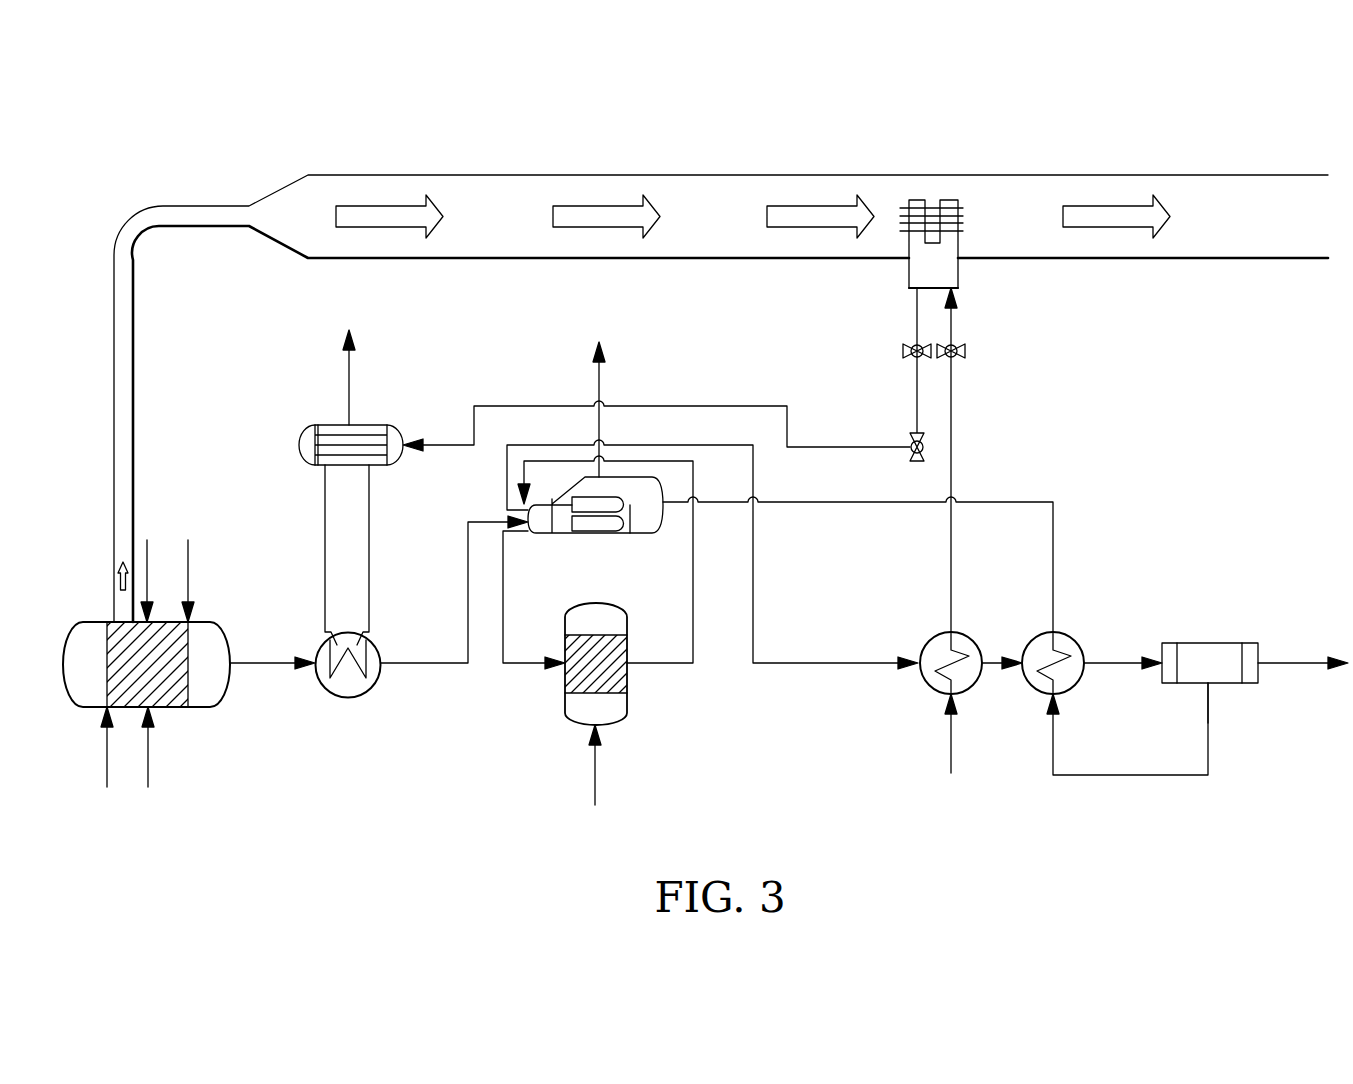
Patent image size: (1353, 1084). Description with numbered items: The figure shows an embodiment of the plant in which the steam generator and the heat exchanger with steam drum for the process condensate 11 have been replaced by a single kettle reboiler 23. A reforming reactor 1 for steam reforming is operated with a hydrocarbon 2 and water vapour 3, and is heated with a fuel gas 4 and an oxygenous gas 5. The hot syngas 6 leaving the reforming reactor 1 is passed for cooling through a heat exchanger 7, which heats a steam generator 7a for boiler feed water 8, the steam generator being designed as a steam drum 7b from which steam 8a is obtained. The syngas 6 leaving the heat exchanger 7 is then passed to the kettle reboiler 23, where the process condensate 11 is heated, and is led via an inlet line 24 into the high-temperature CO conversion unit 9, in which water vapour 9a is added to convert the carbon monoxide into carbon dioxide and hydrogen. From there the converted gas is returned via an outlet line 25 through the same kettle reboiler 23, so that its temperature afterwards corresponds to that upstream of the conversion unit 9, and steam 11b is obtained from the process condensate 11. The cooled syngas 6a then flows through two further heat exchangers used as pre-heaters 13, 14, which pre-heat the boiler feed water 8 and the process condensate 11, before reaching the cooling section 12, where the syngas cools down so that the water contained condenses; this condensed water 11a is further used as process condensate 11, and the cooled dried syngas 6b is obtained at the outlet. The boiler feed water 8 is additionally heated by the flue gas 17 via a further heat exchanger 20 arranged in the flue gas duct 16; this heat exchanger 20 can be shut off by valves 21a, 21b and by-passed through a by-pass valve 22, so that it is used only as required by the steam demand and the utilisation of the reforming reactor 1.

The reforming reactor 1 is at (215, 707).
The hydrocarbon 2 is at (107, 777).
The water vapour 3 is at (148, 777).
The fuel gas 4 is at (147, 553).
The oxygenous gas 5 is at (188, 553).
The syngas 6 is at (258, 663).
The cooled syngas 6a is at (800, 663).
The cooled dried syngas 6b is at (1290, 663).
The heat exchanger 7 is at (372, 645).
The steam generator 7a is at (388, 467).
The steam drum 7b is at (316, 467).
The boiler feed water 8 is at (452, 445).
The steam 8a is at (349, 383).
The high-temperature conversion unit 9 is at (615, 718).
The water vapour 9a is at (595, 773).
The process condensate 11 is at (840, 503).
The condensed water 11a is at (1208, 723).
The steam 11b is at (599, 387).
The cooling section 12 is at (1210, 643).
The pre-heater 13 is at (975, 640).
The pre-heater 14 is at (1075, 640).
The flue gas duct 16 is at (813, 175).
The flue gas 17 is at (563, 227).
The heat exchanger 20 is at (958, 250).
The valve 21a is at (965, 351).
The valve 21b is at (902, 351).
The by-pass valve 22 is at (940, 447).
The kettle reboiler 23 is at (642, 535).
The inlet line 24 is at (535, 665).
The outlet line 25 is at (660, 665).